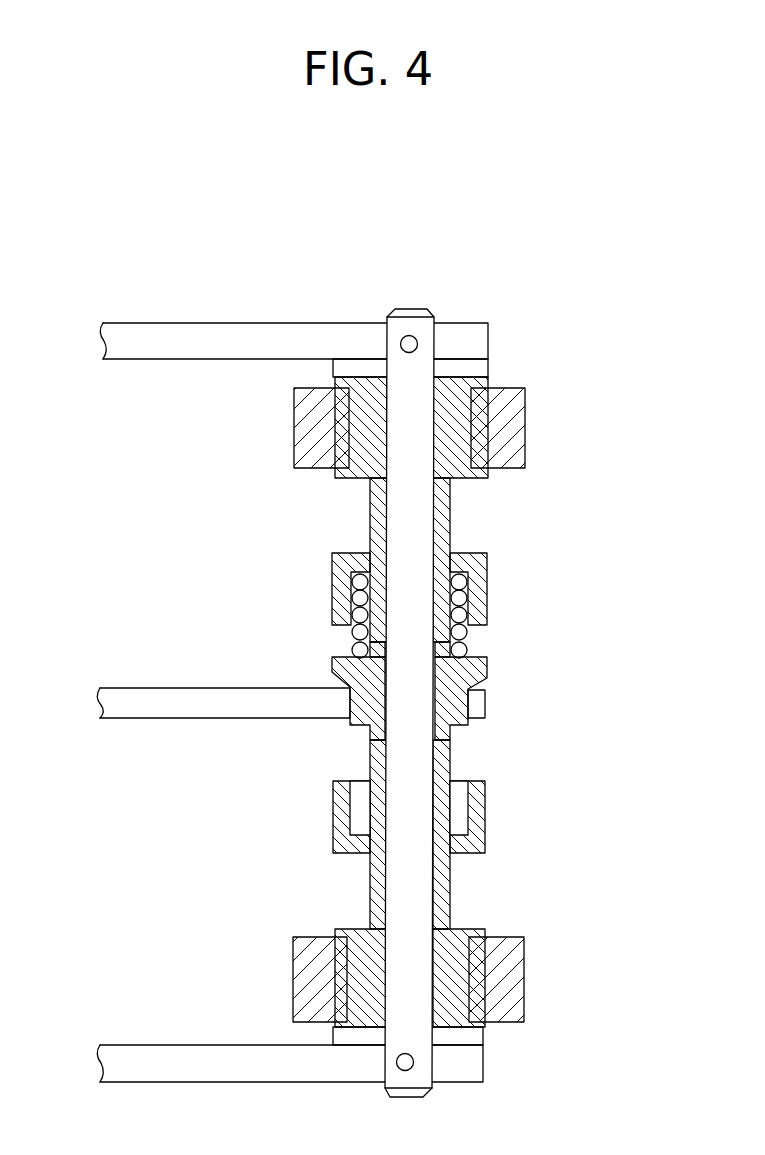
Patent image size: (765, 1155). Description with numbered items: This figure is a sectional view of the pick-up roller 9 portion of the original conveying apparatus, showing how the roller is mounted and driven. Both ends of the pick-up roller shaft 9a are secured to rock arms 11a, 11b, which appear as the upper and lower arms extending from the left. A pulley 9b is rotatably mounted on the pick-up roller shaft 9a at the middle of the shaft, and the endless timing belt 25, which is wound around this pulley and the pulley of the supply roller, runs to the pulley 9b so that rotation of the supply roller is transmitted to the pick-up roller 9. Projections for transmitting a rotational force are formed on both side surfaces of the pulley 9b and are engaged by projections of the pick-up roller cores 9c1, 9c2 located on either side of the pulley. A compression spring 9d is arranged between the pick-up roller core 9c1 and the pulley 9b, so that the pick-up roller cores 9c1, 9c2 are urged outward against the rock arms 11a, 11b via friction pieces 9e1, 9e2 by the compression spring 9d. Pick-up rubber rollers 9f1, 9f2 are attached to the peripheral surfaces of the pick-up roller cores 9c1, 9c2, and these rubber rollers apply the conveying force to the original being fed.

The pick-up roller 9 is at (598, 557).
The pick-up roller shaft 9a is at (418, 1073).
The pulley 9b is at (487, 660).
The pick-up roller core 9c1 is at (440, 518).
The pick-up roller core 9c2 is at (437, 892).
The compression spring 9d is at (458, 593).
The friction piece 9e1 is at (472, 370).
The friction piece 9e2 is at (475, 1037).
The pick-up rubber roller 9f1 is at (515, 430).
The pick-up rubber roller 9f2 is at (500, 988).
The rock arm 11a is at (197, 337).
The rock arm 11b is at (193, 1067).
The timing belt 25 is at (196, 707).